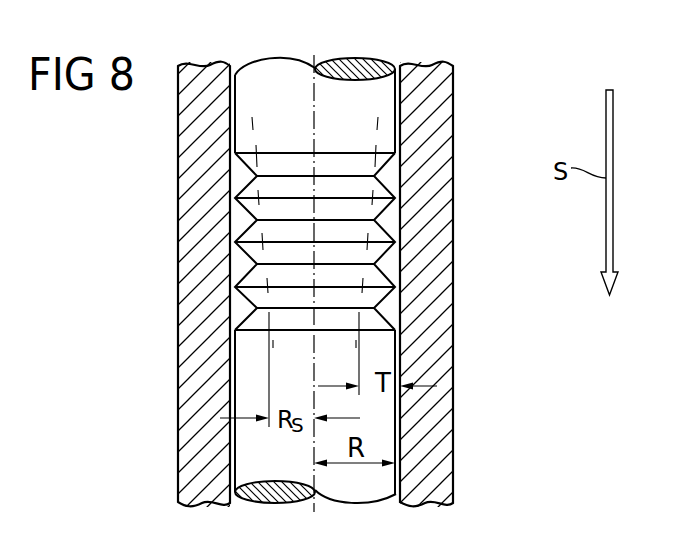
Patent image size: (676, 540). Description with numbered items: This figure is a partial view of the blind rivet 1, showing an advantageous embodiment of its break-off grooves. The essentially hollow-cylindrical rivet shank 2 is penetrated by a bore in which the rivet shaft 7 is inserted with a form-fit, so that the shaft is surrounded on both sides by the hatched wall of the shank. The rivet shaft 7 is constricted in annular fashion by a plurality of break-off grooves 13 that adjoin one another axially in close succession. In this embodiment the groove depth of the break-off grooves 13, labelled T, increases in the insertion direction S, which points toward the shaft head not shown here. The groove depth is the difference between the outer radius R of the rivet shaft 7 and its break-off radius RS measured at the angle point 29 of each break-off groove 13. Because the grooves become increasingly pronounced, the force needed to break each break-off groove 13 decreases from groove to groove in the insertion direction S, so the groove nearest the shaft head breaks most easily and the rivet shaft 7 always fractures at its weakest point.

The blind rivet 1 is at (495, 388).
The rivet shank 2 is at (186, 381).
The rivet shaft 7 is at (276, 78).
The break-off grooves 13 is at (247, 308).
The angle point 29 is at (393, 176).